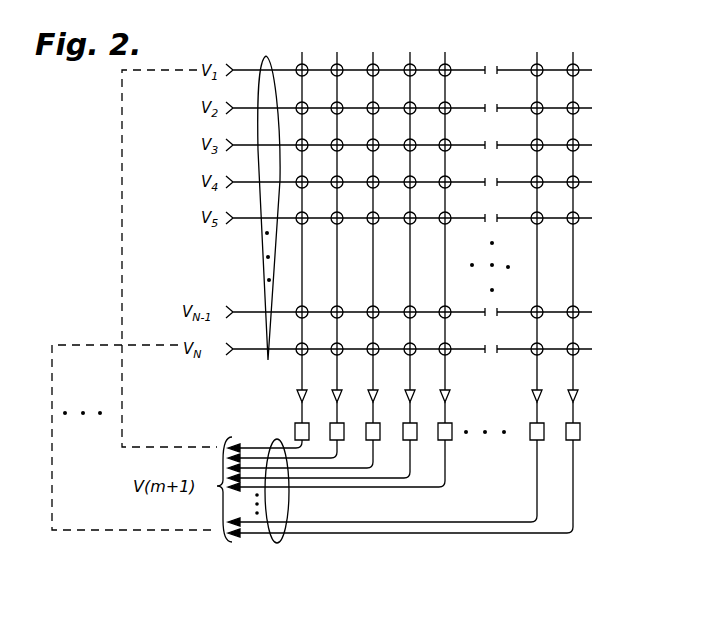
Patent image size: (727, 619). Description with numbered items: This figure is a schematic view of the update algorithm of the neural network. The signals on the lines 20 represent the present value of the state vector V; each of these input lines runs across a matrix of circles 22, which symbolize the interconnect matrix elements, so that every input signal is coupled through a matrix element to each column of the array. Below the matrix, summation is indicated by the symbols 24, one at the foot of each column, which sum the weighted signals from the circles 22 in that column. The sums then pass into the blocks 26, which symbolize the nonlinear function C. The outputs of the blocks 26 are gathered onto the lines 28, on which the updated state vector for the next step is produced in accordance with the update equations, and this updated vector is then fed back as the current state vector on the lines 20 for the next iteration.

The lines 20 is at (266, 56).
The circles 22 is at (449, 66).
The summation symbols 24 is at (577, 394).
The blocks 26 is at (581, 432).
The lines 28 is at (278, 543).